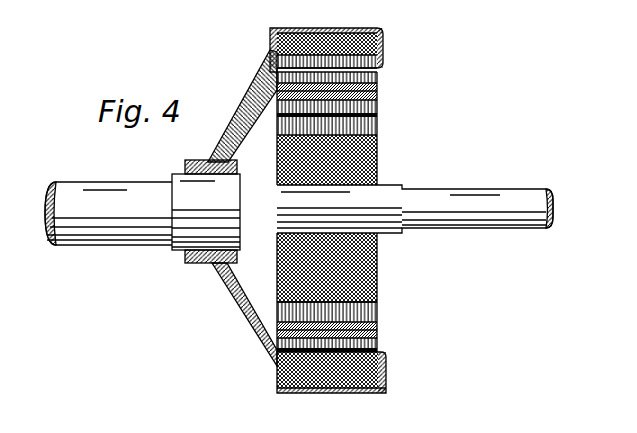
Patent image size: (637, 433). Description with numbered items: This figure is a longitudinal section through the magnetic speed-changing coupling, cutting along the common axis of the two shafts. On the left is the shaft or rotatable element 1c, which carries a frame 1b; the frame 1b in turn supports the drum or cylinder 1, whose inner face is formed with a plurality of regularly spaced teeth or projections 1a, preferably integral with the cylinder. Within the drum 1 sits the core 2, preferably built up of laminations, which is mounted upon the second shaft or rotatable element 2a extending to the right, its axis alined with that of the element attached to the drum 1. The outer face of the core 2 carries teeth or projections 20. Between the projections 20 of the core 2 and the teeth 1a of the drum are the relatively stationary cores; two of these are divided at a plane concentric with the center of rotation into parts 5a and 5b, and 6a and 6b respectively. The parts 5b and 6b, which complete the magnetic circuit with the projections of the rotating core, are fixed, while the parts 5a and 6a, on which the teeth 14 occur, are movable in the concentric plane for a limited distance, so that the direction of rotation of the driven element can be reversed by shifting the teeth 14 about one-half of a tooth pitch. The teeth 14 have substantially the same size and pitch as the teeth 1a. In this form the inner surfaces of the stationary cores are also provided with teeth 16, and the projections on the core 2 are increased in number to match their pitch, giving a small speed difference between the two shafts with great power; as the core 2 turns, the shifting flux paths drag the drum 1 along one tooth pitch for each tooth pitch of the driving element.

The drum or cylinder 1 is at (370, 46).
The teeth or projections 1a is at (367, 63).
The frame 1b is at (217, 329).
The shaft or rotatable element 1c is at (118, 195).
The core 2 is at (380, 155).
The shaft or rotatable element 2a is at (468, 202).
The movable core part 5a is at (377, 83).
The fixed core part 5b is at (367, 95).
The movable core part 6a is at (375, 333).
The fixed core part 6b is at (380, 317).
The teeth or projections 14 is at (375, 343).
The teeth or projections 16 is at (365, 107).
The teeth or projections 20 is at (367, 127).